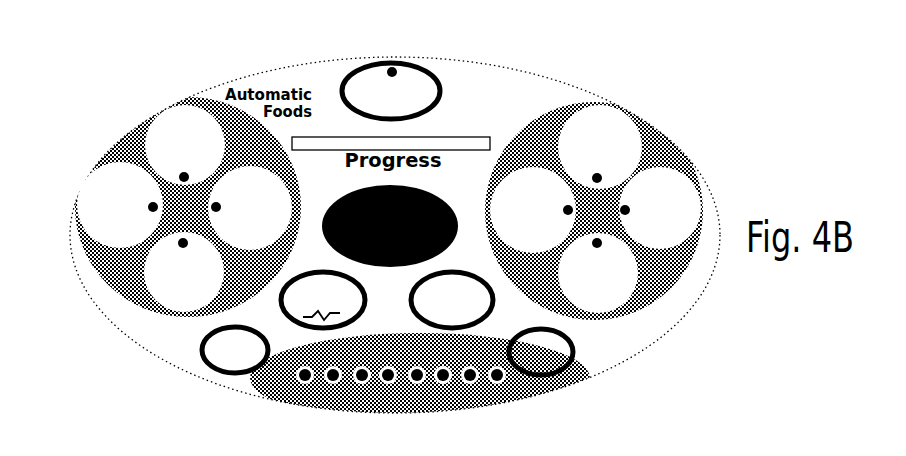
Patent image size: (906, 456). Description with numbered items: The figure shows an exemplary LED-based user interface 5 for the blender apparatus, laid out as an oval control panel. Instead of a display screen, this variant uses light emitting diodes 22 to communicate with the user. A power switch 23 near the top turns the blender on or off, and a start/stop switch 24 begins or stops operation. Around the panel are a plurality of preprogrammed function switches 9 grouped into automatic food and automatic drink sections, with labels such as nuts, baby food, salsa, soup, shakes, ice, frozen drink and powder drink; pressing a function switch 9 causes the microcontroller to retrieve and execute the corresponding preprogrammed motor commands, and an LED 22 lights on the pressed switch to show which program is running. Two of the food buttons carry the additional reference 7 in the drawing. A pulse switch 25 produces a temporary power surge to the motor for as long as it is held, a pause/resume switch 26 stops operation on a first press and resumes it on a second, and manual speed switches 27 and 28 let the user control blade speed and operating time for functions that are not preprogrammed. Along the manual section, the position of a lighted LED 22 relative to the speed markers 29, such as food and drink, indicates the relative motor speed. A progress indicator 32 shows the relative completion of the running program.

The user interface 5 is at (368, 235).
The automatic food function buttons 7 is at (147, 285).
The preprogrammed function switches 9 is at (242, 178).
The light emitting diode 22 is at (183, 175).
The power switch 23 is at (360, 85).
The start/stop switch 24 is at (590, 74).
The pulse switch 25 is at (295, 322).
The pause/resume switch 26 is at (493, 303).
The manual speed switch (high) 27 is at (210, 362).
The manual speed switch (low) 28 is at (572, 365).
The speed markers 29 is at (318, 382).
The progress indicator 32 is at (448, 202).